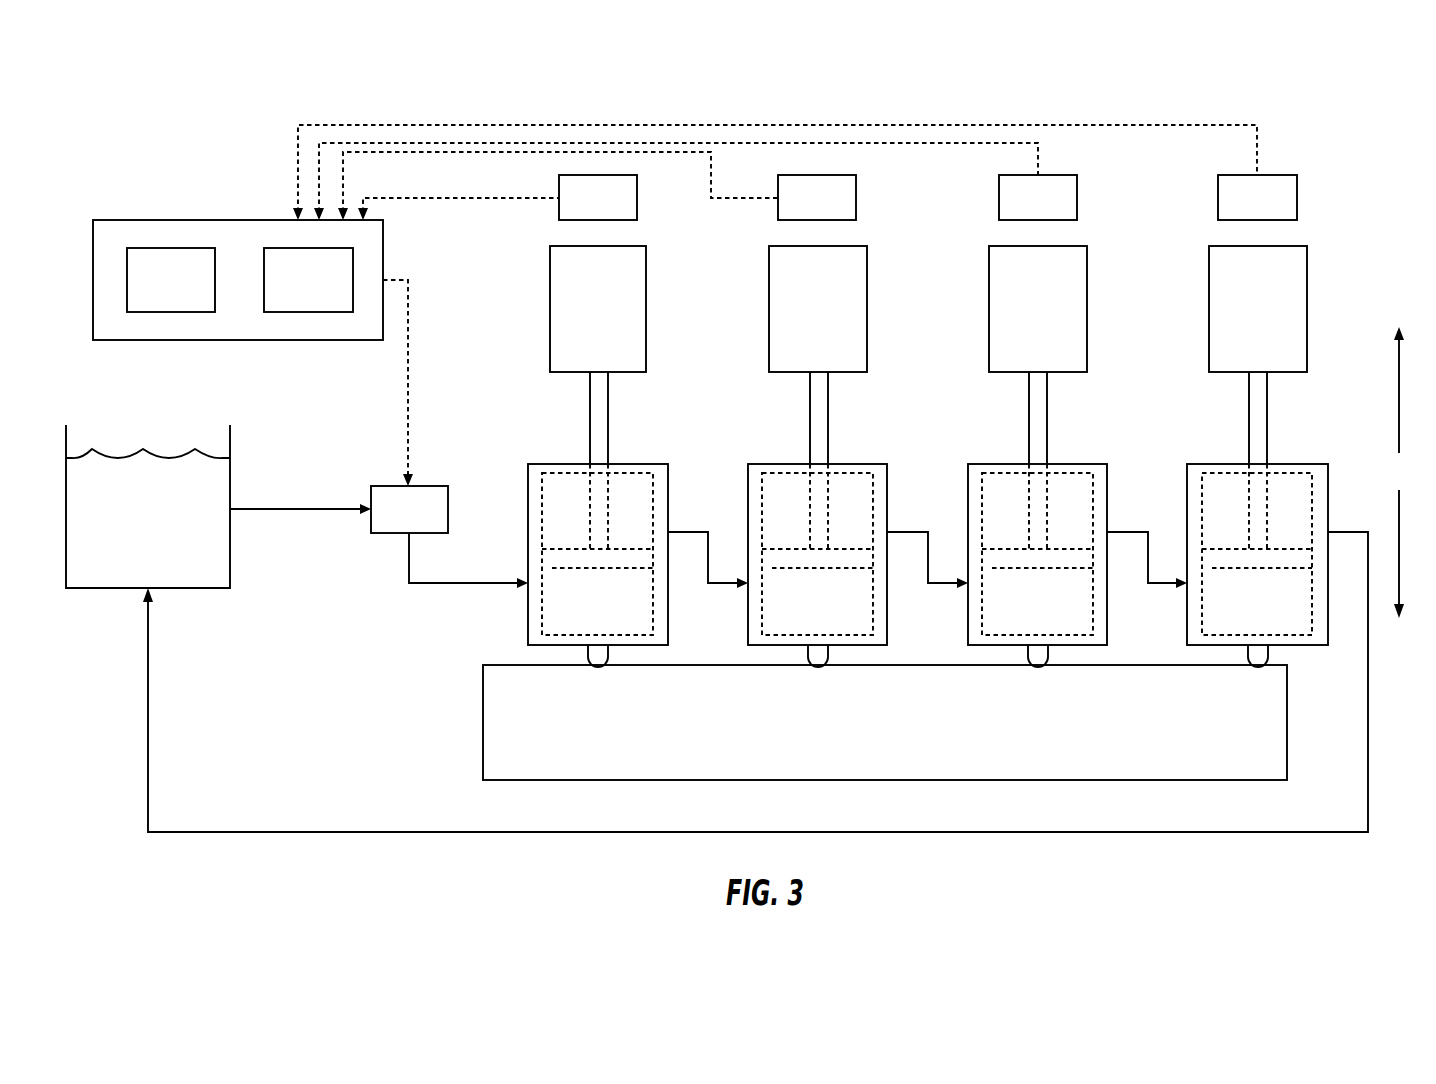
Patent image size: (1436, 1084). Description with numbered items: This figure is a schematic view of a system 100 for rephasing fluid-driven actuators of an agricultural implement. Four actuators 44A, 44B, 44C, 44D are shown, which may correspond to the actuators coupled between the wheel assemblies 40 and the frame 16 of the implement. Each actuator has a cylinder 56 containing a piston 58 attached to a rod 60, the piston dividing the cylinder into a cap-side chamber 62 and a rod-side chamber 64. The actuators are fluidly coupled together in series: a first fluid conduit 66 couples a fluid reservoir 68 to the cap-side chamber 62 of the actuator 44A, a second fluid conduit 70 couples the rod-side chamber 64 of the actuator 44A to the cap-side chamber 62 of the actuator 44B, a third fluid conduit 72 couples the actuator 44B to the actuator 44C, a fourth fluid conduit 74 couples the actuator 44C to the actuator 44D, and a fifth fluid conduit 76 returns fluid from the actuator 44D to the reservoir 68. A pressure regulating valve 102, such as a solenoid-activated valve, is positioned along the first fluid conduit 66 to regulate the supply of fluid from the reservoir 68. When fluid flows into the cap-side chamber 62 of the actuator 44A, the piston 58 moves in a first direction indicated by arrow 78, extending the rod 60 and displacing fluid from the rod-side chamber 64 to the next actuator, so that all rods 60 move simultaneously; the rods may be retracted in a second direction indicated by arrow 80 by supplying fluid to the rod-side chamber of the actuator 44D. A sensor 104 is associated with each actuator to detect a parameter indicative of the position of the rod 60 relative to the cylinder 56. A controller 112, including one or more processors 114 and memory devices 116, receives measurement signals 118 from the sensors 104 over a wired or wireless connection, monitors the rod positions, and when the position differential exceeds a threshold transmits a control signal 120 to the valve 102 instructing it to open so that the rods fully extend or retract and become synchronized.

The system 100 is at (160, 148).
The controller 112 is at (175, 340).
The processor 114 is at (155, 294).
The memory device 116 is at (292, 294).
The measurement signals 118 is at (508, 200).
The control signal 120 is at (408, 312).
The sensor 104 is at (637, 197).
The wheel assembly 40 is at (646, 302).
The rod 60 is at (608, 437).
The rod-side chamber 64 is at (562, 484).
The cylinder 56 is at (528, 500).
The piston 58 is at (552, 568).
The cap-side chamber 62 is at (637, 598).
The actuator 44A is at (504, 474).
The actuator 44B is at (722, 474).
The actuator 44C is at (957, 474).
The actuator 44D is at (1175, 474).
The second fluid conduit 70 is at (686, 535).
The third fluid conduit 72 is at (941, 585).
The fourth fluid conduit 74 is at (1130, 535).
The frame 16 is at (885, 780).
The fifth fluid conduit 76 is at (403, 832).
The fluid reservoir 68 is at (110, 588).
The first fluid conduit 66 is at (297, 509).
The pressure regulating valve 102 is at (388, 533).
The arrow 78 is at (1399, 380).
The arrow 80 is at (1399, 548).